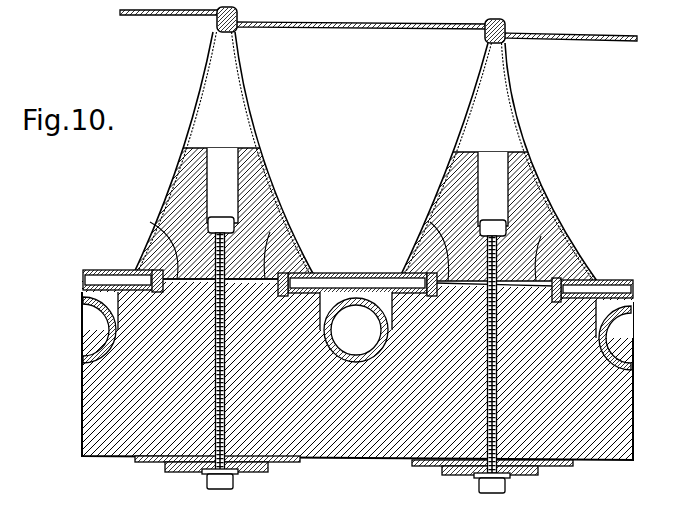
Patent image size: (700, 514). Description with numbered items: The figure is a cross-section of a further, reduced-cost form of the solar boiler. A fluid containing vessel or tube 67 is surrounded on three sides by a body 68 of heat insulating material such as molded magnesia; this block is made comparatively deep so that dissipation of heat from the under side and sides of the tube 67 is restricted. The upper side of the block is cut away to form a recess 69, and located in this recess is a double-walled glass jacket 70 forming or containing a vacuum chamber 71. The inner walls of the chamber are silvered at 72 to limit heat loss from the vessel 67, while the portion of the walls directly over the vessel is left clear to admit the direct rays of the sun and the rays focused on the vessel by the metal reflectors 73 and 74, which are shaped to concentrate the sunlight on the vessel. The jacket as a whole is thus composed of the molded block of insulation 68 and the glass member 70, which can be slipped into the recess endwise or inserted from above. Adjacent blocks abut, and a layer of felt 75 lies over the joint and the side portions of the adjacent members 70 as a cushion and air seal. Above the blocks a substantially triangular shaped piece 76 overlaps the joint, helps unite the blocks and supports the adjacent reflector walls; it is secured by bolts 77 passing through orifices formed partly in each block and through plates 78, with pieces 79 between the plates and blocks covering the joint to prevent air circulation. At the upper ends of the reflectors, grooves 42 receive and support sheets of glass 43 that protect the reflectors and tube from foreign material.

The grooves 42 is at (238, 17).
The sheets of glass 43 is at (364, 28).
The fluid containing vessel or tube 67 is at (98, 312).
The body of heat insulating material 68 is at (96, 410).
The recess 69 is at (175, 258).
The double-walled glass jacket 70 is at (93, 262).
The vacuum chamber 71 is at (92, 280).
The silvering 72 is at (117, 270).
The metal reflector 73 is at (268, 165).
The metal reflector 74 is at (211, 72).
The layer of felt 75 is at (268, 253).
The triangular shaped piece 76 is at (186, 157).
The bolts 77 is at (214, 490).
The plates 78 is at (256, 473).
The pieces 79 is at (143, 463).